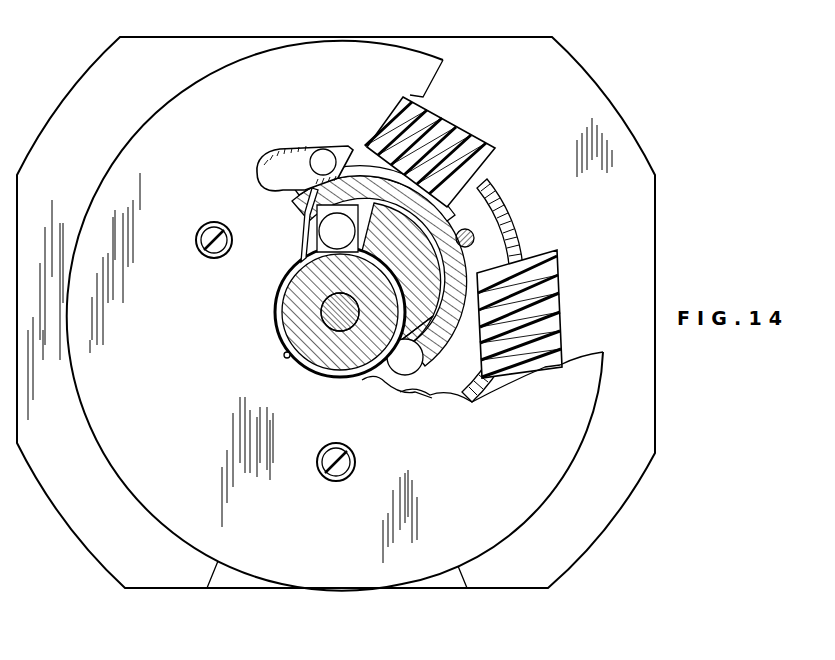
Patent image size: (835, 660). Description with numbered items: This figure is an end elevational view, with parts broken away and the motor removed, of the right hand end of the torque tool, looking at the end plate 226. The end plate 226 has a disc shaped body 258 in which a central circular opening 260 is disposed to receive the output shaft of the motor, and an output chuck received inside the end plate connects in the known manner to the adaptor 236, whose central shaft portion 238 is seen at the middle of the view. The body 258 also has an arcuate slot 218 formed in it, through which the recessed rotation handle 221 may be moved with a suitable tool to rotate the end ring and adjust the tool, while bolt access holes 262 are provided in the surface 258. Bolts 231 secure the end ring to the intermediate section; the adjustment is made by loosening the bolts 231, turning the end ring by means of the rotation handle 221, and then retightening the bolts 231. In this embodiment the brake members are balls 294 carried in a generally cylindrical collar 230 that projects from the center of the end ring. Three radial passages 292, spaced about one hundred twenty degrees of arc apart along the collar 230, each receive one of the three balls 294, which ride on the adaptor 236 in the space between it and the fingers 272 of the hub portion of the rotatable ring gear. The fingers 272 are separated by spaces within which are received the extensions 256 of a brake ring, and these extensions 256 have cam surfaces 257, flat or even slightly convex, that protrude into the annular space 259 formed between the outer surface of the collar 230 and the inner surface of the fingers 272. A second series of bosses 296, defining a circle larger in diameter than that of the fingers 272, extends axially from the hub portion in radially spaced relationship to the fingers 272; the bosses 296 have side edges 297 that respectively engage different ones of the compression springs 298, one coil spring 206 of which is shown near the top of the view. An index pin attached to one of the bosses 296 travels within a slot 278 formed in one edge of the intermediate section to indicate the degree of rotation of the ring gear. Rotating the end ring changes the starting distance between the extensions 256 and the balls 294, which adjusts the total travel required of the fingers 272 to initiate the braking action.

The spring 206 is at (446, 108).
The arcuate slot 218 is at (293, 157).
The rotation handle 221 is at (325, 158).
The end plate 226 is at (193, 555).
The collar 230 is at (306, 234).
The bolts 231 is at (207, 232).
The adaptor 236 is at (295, 291).
The hub shaft 238 is at (320, 311).
The extensions 256 is at (450, 248).
The cam surfaces 257 is at (440, 278).
The disc shaped body 258 is at (133, 379).
The annular space 259 is at (318, 217).
The central circular opening 260 is at (287, 359).
The bolt access holes 262 is at (206, 256).
The fingers 272 is at (443, 392).
The slot 278 is at (218, 576).
The radial passages 292 is at (376, 380).
The balls 294 is at (403, 397).
The bosses 296 is at (500, 218).
The side edges 297 is at (562, 281).
The compression springs 298 is at (482, 131).